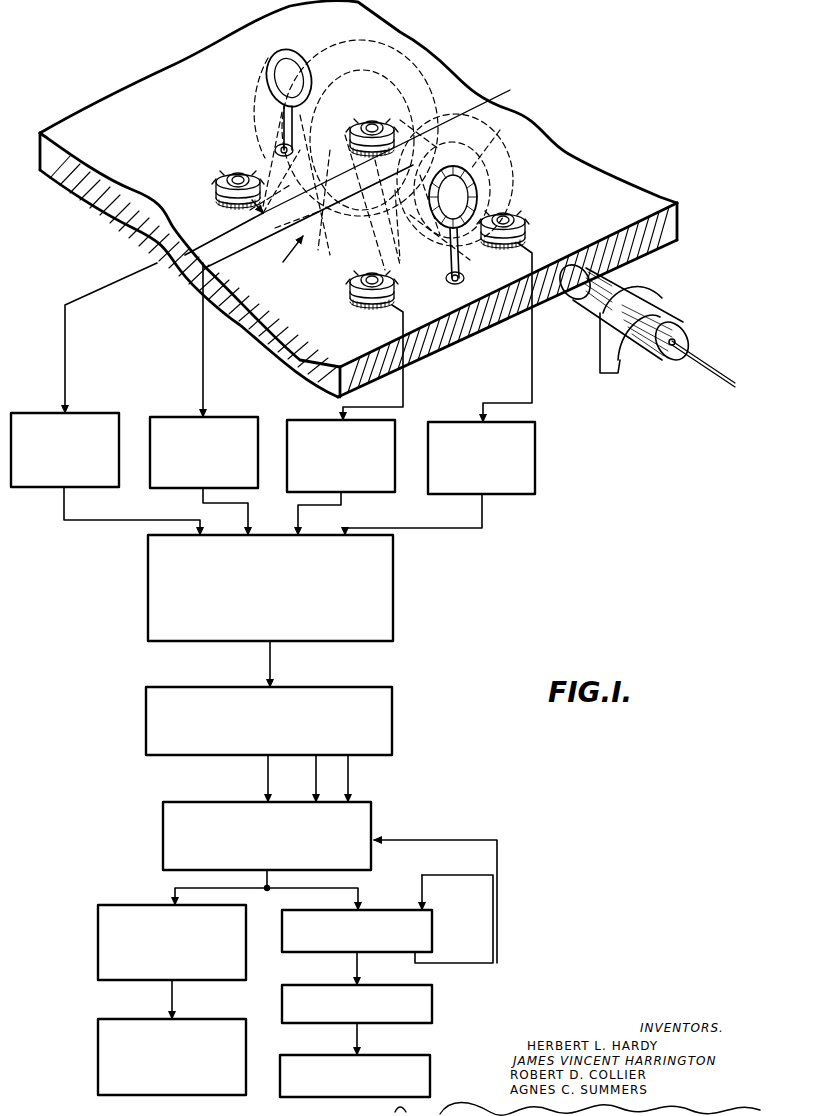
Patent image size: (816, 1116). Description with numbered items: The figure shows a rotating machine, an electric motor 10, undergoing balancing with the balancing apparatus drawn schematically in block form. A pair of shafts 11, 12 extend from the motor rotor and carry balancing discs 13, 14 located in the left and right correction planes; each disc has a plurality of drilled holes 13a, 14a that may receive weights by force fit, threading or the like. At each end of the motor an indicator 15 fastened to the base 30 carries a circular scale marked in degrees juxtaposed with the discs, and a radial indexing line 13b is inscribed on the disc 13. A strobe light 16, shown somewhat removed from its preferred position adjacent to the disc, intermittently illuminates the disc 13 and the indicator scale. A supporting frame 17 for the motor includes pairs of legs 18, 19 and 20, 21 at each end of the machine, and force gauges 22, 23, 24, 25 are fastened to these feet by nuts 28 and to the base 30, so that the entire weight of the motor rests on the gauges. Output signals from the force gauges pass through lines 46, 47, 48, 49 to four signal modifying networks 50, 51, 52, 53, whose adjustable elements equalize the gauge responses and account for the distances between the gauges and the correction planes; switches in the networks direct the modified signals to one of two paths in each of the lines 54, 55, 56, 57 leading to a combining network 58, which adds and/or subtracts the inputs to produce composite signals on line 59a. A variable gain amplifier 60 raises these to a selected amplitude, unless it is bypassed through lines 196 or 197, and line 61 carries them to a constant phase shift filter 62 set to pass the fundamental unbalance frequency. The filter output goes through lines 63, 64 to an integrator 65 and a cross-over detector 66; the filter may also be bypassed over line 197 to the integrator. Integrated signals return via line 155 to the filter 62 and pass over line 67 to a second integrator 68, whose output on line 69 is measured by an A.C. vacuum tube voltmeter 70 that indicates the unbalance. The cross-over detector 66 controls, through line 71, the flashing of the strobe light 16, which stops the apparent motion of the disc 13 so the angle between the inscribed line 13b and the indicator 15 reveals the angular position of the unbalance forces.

The electric motor 10 is at (422, 61).
The shaft 11 is at (467, 228).
The shaft 12 is at (262, 60).
The balancing disc 13 is at (434, 225).
The drilled holes 13a is at (428, 203).
The radial indexing line 13b is at (468, 168).
The balancing disc 14 is at (305, 56).
The drilled holes 14a is at (296, 60).
The indicator 15 is at (450, 255).
The strobe light 16 is at (656, 318).
The supporting frame 17 is at (281, 260).
The leg 18 is at (344, 290).
The leg 19 is at (492, 188).
The leg 20 is at (299, 216).
The leg 21 is at (401, 144).
The force gauge 22 is at (396, 278).
The force gauge 23 is at (517, 218).
The force gauge 24 is at (370, 120).
The force gauge 25 is at (233, 178).
The nuts 28 is at (242, 172).
The base 30 is at (537, 139).
The line 46 is at (534, 362).
The line 47 is at (405, 388).
The line 48 is at (205, 384).
The line 49 is at (66, 368).
The signal modifying network 50 is at (532, 423).
The signal modifying network 51 is at (388, 421).
The signal modifying network 52 is at (243, 418).
The signal modifying network 53 is at (98, 414).
The line 54 is at (413, 514).
The line 55 is at (306, 500).
The line 56 is at (212, 503).
The line 57 is at (138, 523).
The combining network 58 is at (394, 601).
The line 59a is at (272, 676).
The variable gain amplifier 60 is at (393, 718).
The line 61 is at (266, 782).
The constant phase shift filter 62 is at (372, 832).
The line 63 is at (356, 892).
The line 64 is at (176, 888).
The integrator 65 is at (434, 920).
The cross-over detector 66 is at (98, 912).
The line 67 is at (359, 970).
The second integrator 68 is at (433, 1004).
The line 69 is at (359, 1040).
The A.C. vacuum tube voltmeter 70 is at (431, 1076).
The line 71 is at (171, 997).
The line 155 is at (478, 832).
The line 196 is at (315, 772).
The line 197 is at (349, 773).